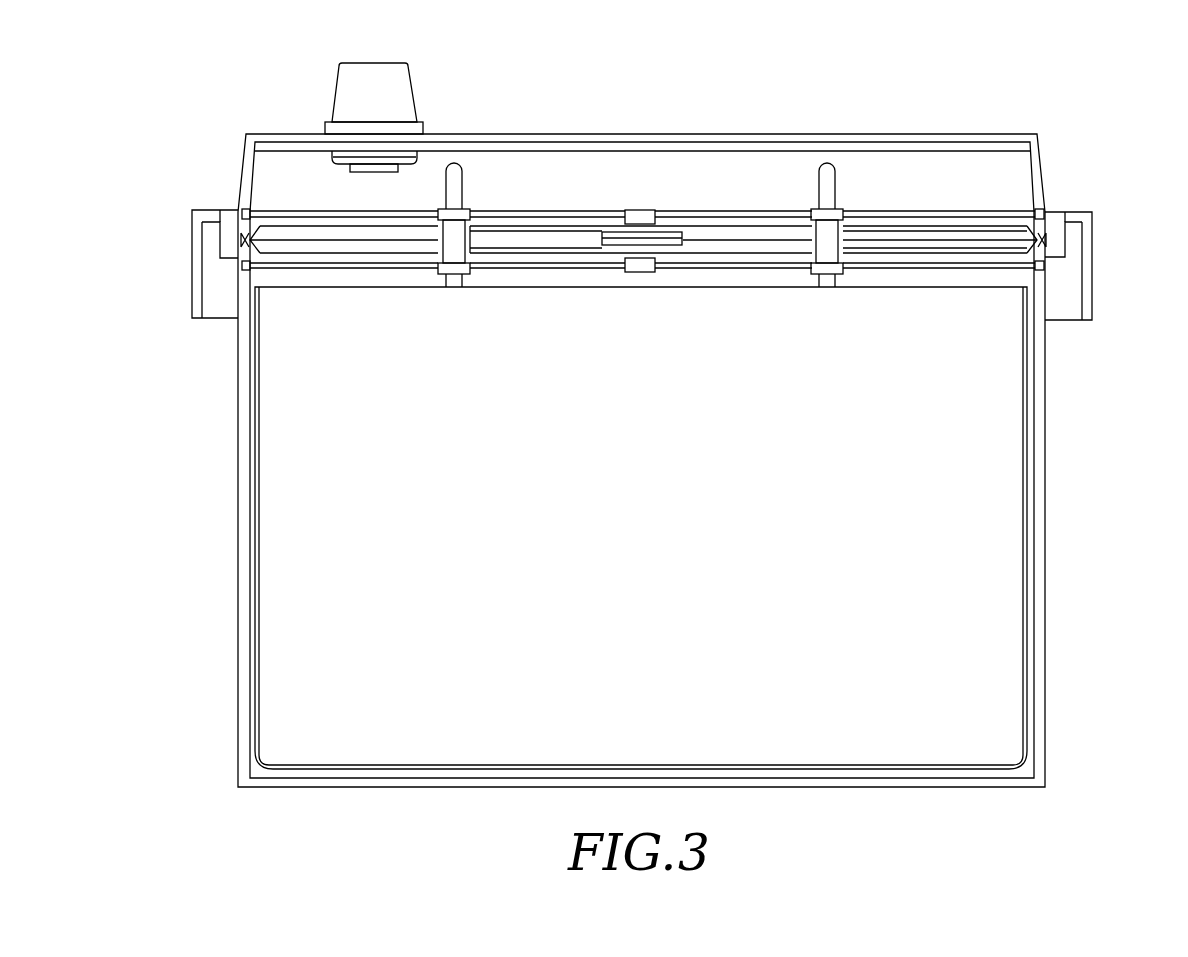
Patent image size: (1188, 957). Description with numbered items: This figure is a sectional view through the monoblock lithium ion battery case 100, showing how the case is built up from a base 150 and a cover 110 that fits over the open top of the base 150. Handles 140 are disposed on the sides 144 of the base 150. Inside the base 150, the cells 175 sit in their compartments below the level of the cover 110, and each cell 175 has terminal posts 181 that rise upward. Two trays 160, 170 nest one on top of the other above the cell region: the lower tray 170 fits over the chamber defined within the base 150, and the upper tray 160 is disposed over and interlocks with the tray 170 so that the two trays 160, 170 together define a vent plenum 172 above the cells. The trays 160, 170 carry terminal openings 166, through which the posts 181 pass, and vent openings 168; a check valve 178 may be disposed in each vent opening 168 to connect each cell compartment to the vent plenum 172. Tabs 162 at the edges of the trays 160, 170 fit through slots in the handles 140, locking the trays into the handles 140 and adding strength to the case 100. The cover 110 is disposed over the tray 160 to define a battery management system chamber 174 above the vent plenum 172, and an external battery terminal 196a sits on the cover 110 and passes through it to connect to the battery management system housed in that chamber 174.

The monoblock lithium ion battery case 100 is at (223, 106).
The cover 110 is at (1017, 136).
The handle 140 is at (1085, 256).
The side 144 is at (246, 627).
The base 150 is at (1072, 532).
The tray 160 is at (263, 214).
The tab 162 is at (236, 247).
The terminal opening 166 is at (453, 277).
The vent opening 168 is at (655, 212).
The tray 170 is at (266, 257).
The vent plenum 172 is at (328, 240).
The battery management system chamber 174 is at (990, 199).
The cell 175 is at (1036, 400).
The check valve 178 is at (635, 270).
The post 181 is at (455, 186).
The external battery terminal 196a is at (394, 77).